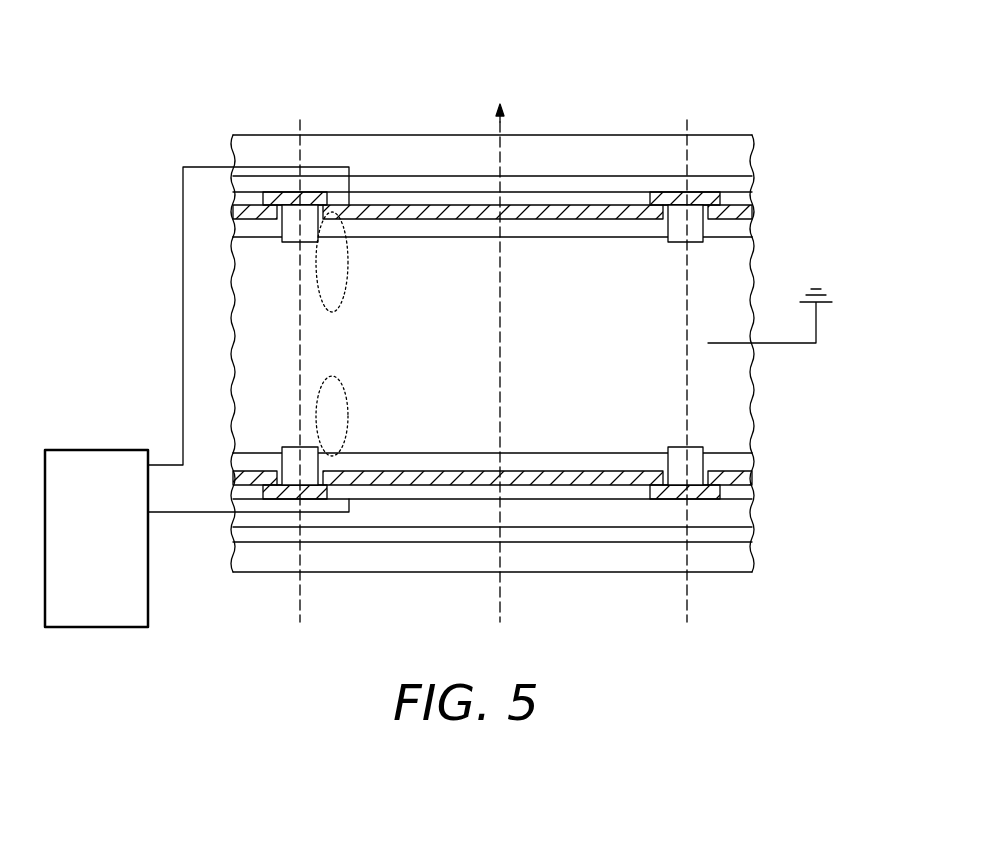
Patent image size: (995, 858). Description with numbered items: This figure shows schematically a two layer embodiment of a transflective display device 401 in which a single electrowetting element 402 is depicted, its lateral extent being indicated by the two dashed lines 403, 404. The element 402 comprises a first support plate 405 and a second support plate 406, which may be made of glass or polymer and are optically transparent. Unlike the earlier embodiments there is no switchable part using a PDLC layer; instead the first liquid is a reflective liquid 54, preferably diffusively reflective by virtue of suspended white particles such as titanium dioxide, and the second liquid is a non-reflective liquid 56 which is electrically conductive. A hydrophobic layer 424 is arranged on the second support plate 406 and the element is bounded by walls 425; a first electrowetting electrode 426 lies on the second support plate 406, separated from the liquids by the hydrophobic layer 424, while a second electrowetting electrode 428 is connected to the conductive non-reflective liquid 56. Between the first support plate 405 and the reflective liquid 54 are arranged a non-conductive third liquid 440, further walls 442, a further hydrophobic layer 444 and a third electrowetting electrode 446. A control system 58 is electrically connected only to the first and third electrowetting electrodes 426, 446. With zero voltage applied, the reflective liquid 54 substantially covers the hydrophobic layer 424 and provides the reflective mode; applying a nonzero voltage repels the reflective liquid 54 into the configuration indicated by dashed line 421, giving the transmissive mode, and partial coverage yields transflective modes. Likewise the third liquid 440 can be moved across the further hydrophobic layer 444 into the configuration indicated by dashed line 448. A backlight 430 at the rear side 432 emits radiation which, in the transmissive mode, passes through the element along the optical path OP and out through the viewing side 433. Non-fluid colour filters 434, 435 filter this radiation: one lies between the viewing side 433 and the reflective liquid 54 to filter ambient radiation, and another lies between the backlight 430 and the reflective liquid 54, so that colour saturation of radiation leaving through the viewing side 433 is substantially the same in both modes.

The transflective display device 401 is at (798, 123).
The electrowetting element 402 is at (419, 128).
The dashed line 403 is at (299, 120).
The dashed line 404 is at (687, 120).
The first support plate 405 is at (737, 157).
The second support plate 406 is at (740, 513).
The dashed line 421 is at (345, 392).
The hydrophobic layer 424 is at (460, 478).
The walls 425 is at (290, 446).
The first electrowetting electrode 426 is at (582, 495).
The second electrowetting electrode 428 is at (816, 325).
The backlight 430 is at (740, 557).
The rear side 432 is at (600, 572).
The viewing side 433 is at (630, 135).
The non-fluid colour filter 434 is at (245, 535).
The non-fluid colour filter 435 is at (737, 187).
The third liquid 440 is at (648, 222).
The further walls 442 is at (290, 244).
The further hydrophobic layer 444 is at (432, 213).
The third electrowetting electrode 446 is at (492, 195).
The dashed line 448 is at (345, 298).
The reflective liquid 54 is at (648, 465).
The non-reflective liquid 56 is at (258, 338).
The controller 58 is at (197, 397).
The optical path OP is at (502, 122).